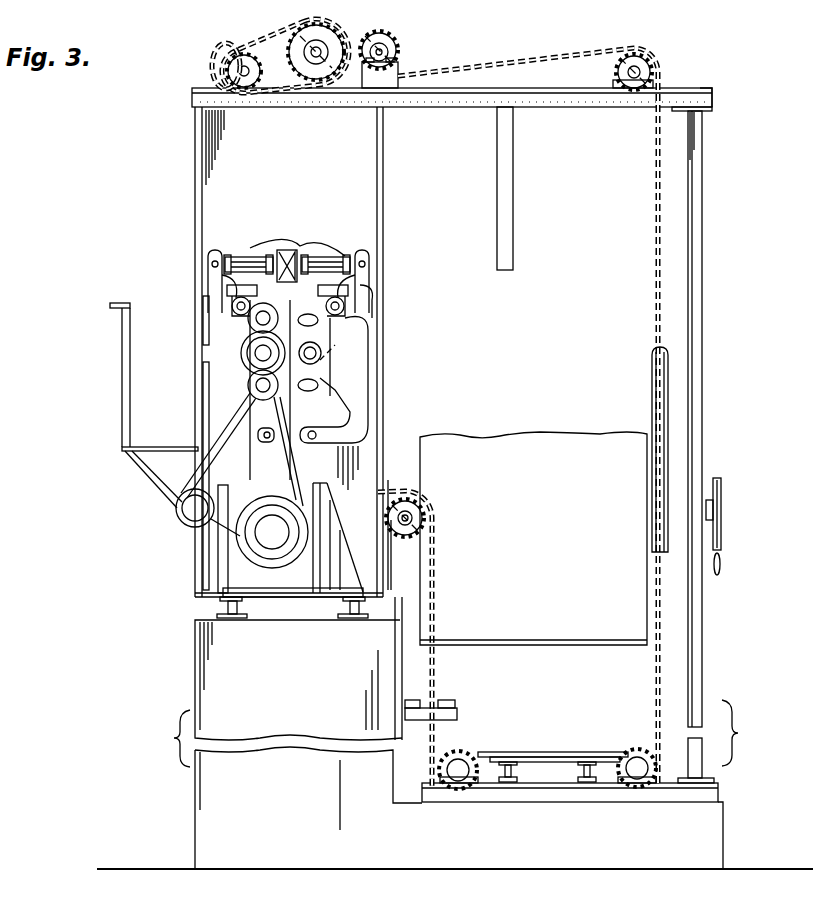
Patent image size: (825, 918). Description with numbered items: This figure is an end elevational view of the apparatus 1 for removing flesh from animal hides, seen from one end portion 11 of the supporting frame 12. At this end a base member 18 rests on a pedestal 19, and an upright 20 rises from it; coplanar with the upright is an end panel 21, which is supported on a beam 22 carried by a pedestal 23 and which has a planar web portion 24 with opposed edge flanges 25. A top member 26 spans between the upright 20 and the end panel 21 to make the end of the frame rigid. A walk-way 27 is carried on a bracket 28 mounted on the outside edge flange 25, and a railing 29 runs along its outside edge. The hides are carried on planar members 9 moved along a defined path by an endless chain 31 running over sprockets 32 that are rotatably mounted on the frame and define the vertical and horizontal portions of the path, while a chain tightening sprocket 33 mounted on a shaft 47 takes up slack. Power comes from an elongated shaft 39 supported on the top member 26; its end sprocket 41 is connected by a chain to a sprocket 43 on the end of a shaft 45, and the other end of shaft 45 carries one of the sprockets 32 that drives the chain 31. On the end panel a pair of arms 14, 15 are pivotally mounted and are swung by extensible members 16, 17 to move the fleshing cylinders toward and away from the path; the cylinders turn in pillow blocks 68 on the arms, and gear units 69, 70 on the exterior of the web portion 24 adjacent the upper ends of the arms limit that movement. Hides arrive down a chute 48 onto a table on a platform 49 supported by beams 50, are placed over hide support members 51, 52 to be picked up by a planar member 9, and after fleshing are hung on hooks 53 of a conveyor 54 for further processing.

The apparatus for removing flesh from animal hides 1 is at (727, 84).
The planar member 9 is at (497, 218).
The end portion 11 is at (214, 216).
The supporting frame 12 is at (712, 112).
The arm 14 is at (360, 306).
The arm 15 is at (203, 303).
The extensible member 16 is at (330, 262).
The extensible member 17 is at (258, 262).
The base member 18 is at (547, 800).
The pedestal 19 is at (712, 832).
The upright 20 is at (703, 447).
The end panel 21 is at (197, 146).
The beam 22 is at (218, 600).
The pedestal 23 is at (195, 666).
The planar web portion 24 is at (370, 450).
The edge flange 25 is at (383, 372).
The top member 26 is at (560, 100).
The walk-way 27 is at (180, 446).
The bracket 28 is at (172, 492).
The railing 29 is at (122, 346).
The endless chain 31 is at (657, 242).
The sprocket 32 is at (640, 58).
The chain tightening sprocket 33 is at (386, 44).
The elongated shaft 39 is at (226, 66).
The end sprocket 41 is at (246, 82).
The sprocket 43 is at (306, 40).
The shaft 45 is at (316, 64).
The shaft 47 is at (390, 52).
The chute 48 is at (512, 448).
The platform 49 is at (522, 757).
The beam 50 is at (566, 758).
The hide support member 51 is at (456, 706).
The hide support member 52 is at (414, 706).
The hook 53 is at (722, 566).
The conveyor 54 is at (722, 490).
The pillow block 68 is at (324, 352).
The gear unit 69 is at (350, 282).
The gear unit 70 is at (228, 280).